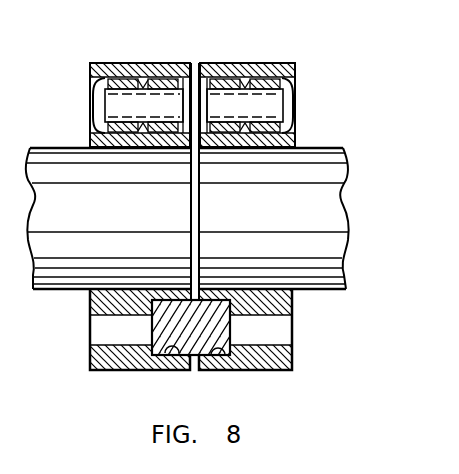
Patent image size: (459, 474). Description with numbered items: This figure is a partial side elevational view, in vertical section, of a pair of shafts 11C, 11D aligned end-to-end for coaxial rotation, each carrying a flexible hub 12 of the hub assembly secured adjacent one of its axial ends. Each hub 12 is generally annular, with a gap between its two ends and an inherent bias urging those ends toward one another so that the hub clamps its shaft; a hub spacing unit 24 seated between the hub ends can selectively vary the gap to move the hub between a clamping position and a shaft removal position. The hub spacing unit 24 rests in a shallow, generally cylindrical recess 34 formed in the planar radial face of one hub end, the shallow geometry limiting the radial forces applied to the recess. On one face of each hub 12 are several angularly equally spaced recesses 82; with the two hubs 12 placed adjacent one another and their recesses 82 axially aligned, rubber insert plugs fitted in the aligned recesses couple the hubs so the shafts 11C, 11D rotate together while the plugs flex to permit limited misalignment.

The hub 12 is at (142, 66).
The hub spacing unit 24 is at (297, 97).
The shaft 11C is at (63, 168).
The shaft 11D is at (322, 148).
The cylindrical recess 34 is at (231, 321).
The recess 82 is at (170, 343).